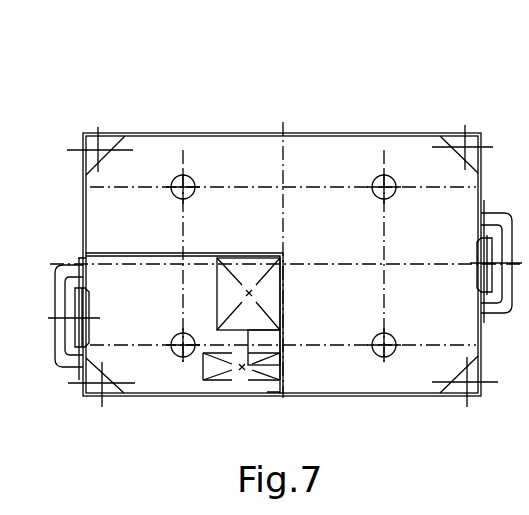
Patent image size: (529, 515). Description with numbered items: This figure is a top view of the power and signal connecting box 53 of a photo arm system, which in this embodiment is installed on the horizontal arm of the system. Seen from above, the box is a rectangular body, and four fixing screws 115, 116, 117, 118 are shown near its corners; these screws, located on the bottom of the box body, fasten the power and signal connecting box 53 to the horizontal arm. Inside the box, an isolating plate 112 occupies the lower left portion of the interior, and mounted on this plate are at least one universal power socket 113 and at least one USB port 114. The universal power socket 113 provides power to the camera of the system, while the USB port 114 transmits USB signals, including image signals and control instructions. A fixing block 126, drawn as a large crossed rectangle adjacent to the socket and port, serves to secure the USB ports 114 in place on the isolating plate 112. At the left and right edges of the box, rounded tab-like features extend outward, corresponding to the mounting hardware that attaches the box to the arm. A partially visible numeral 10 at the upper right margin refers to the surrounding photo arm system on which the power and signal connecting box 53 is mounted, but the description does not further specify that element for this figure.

The power and signal connecting box 53 is at (207, 90).
The isolating plate 112 is at (117, 253).
The universal power socket 113 is at (278, 340).
The USB port 114 is at (275, 372).
The fixing screw 115 is at (179, 356).
The fixing screw 116 is at (178, 177).
The fixing screw 117 is at (388, 178).
The fixing screw 118 is at (390, 356).
The fixing block 126 is at (270, 295).
The device 10 is at (528, 110).